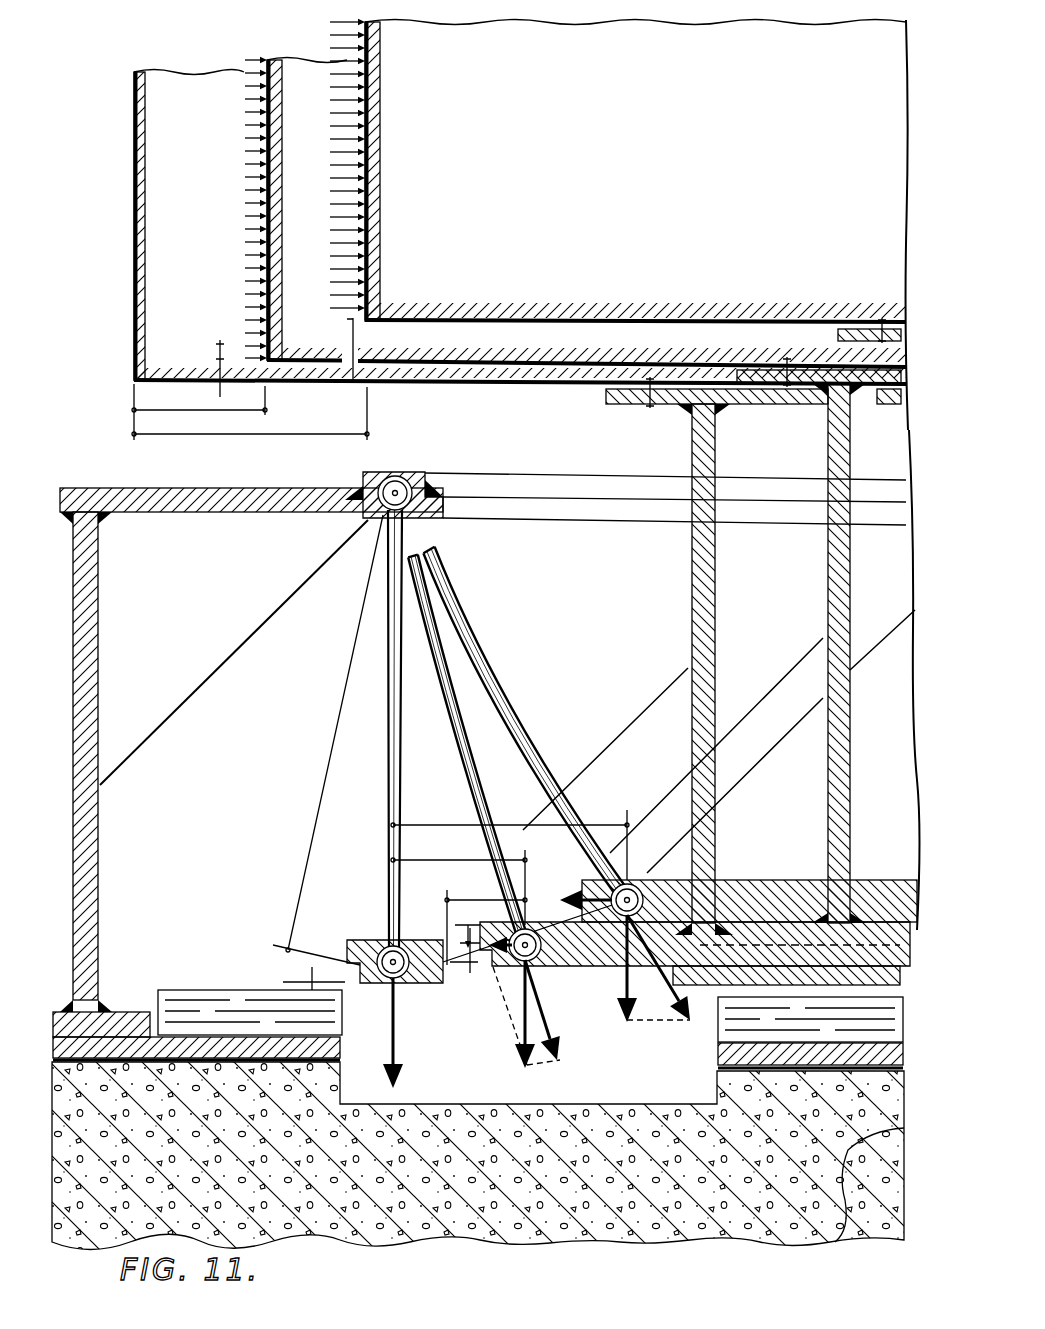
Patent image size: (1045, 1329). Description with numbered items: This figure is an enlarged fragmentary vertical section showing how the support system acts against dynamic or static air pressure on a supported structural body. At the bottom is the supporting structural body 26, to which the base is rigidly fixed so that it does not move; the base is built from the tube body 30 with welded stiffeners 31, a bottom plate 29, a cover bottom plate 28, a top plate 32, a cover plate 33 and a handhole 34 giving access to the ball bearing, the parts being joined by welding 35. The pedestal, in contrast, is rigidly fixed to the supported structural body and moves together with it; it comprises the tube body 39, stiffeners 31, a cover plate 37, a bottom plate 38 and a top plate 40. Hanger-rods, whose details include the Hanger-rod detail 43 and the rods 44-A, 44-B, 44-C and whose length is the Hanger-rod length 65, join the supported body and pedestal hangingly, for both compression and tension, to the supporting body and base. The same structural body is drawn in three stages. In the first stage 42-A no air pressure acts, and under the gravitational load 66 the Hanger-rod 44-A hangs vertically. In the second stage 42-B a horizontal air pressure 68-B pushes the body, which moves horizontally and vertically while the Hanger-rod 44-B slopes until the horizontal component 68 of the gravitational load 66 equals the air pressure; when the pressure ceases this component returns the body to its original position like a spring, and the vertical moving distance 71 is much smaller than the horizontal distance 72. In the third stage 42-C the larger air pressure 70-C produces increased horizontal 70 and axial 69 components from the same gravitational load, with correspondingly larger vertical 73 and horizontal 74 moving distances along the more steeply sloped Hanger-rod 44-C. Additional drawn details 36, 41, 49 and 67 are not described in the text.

The supporting structural body 26 is at (478, 1156).
The cover bottom plate 28 is at (341, 1056).
The bottom plate 29 is at (122, 1012).
The tube body of base 30 is at (100, 878).
The stiffeners 31 is at (185, 700).
The top plate 32 is at (243, 488).
The cover plate 33 is at (366, 472).
The handhole 34 is at (405, 478).
The welding 35 is at (100, 524).
The bearing pad 36 is at (237, 1034).
The cover plate 37 is at (388, 980).
The bottom plate 38 is at (352, 940).
The tube body of pedestal 39 is at (716, 552).
The top plate 40 is at (838, 334).
The bolt 41 is at (882, 318).
The structural body, first stage 42-A is at (140, 291).
The structural body, second stage 42-B is at (273, 272).
The structural body, third stage 42-C is at (365, 232).
The Hanger-rod detail 43 is at (388, 530).
The Hanger-rod 44-A is at (402, 788).
The Hanger-rod 44-B is at (484, 790).
The inclined strut C 44-C is at (532, 723).
The clearance gap 49 is at (286, 982).
The length of the Hanger-rod 65 is at (332, 724).
The gravitational load 66 is at (395, 1023).
The resultant force on strut B 67 is at (554, 1022).
The horizontal component 68 is at (490, 921).
The horizontal air pressure 68-B is at (245, 167).
The axial component 69 is at (670, 1020).
The horizontal component 70 is at (580, 893).
The horizontal air pressure 70-C is at (330, 116).
The vertical moving distance 71 is at (465, 990).
The horizontal moving distance 72 is at (215, 408).
The vertical moving distance 73 is at (449, 900).
The horizontal moving distance 74 is at (296, 433).